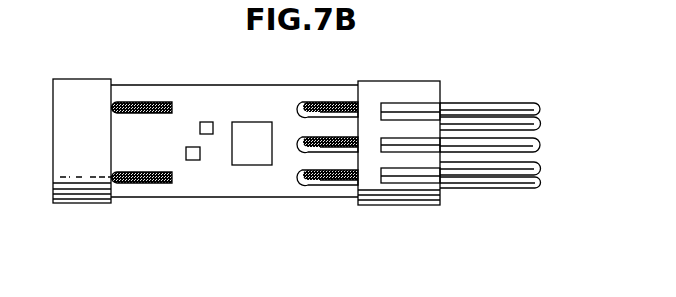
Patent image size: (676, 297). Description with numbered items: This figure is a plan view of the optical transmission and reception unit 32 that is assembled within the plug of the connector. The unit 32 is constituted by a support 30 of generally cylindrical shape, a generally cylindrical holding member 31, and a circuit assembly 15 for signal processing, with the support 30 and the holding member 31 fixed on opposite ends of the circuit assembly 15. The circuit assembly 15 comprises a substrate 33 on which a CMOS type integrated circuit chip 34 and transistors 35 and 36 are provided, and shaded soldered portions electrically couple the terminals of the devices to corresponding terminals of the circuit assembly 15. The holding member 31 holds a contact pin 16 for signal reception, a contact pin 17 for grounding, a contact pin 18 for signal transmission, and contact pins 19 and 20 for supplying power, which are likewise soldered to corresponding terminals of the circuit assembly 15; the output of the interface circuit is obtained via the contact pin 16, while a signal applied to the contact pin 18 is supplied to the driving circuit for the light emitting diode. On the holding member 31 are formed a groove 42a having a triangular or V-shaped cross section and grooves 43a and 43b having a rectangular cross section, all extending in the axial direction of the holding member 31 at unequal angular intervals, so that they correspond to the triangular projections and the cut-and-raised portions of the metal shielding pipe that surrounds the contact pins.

The circuit assembly 15 is at (269, 82).
The contact pin 16 is at (497, 103).
The contact pin 17 is at (540, 147).
The contact pin 18 is at (509, 183).
The contact pin 19 is at (540, 121).
The contact pin 20 is at (540, 170).
The support 30 is at (88, 204).
The holding member 31 is at (373, 207).
The optical transmission and reception unit 32 is at (160, 68).
The substrate 33 is at (236, 198).
The CMOS type integrated circuit chip 34 is at (252, 122).
The transistor 35 is at (186, 154).
The transistor 36 is at (206, 122).
The groove 42a is at (382, 140).
The groove 43a is at (410, 184).
The groove 43b is at (415, 108).